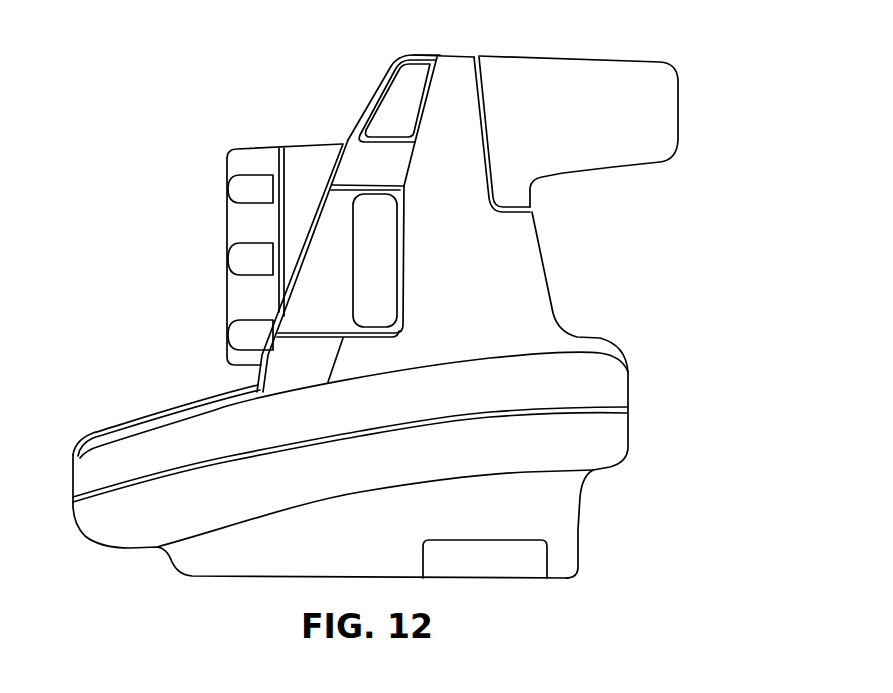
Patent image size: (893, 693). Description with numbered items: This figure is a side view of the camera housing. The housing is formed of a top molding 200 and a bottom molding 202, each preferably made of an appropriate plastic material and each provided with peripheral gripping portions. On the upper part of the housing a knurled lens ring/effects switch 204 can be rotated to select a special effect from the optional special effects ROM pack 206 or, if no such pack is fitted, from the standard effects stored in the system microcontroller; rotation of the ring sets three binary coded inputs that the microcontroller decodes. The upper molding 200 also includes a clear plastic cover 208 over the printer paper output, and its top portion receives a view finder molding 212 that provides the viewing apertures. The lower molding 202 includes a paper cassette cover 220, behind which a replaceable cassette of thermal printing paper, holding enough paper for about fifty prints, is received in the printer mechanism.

The top molding 200 is at (537, 298).
The bottom molding 202 is at (568, 523).
The knurled lens ring/effects switch 204 is at (237, 165).
The optional special effects ROM pack 206 is at (387, 277).
The clear plastic cover 208 is at (188, 398).
The view finder molding 212 is at (598, 155).
The paper cassette cover 220 is at (530, 572).